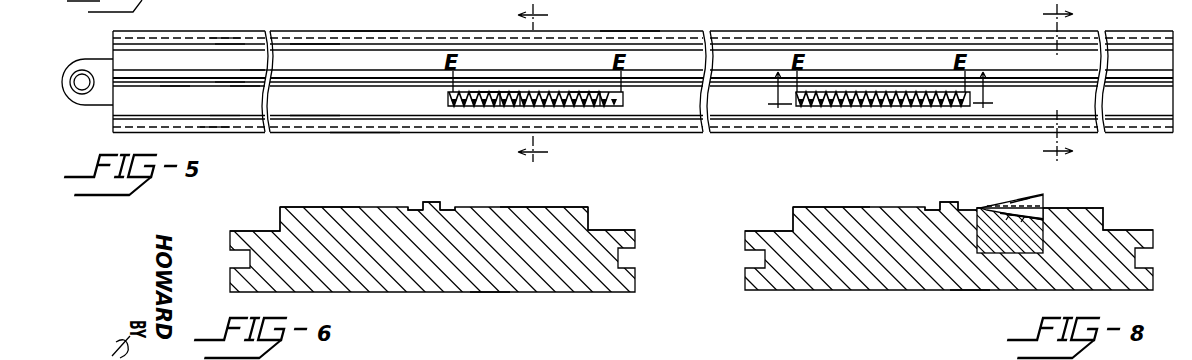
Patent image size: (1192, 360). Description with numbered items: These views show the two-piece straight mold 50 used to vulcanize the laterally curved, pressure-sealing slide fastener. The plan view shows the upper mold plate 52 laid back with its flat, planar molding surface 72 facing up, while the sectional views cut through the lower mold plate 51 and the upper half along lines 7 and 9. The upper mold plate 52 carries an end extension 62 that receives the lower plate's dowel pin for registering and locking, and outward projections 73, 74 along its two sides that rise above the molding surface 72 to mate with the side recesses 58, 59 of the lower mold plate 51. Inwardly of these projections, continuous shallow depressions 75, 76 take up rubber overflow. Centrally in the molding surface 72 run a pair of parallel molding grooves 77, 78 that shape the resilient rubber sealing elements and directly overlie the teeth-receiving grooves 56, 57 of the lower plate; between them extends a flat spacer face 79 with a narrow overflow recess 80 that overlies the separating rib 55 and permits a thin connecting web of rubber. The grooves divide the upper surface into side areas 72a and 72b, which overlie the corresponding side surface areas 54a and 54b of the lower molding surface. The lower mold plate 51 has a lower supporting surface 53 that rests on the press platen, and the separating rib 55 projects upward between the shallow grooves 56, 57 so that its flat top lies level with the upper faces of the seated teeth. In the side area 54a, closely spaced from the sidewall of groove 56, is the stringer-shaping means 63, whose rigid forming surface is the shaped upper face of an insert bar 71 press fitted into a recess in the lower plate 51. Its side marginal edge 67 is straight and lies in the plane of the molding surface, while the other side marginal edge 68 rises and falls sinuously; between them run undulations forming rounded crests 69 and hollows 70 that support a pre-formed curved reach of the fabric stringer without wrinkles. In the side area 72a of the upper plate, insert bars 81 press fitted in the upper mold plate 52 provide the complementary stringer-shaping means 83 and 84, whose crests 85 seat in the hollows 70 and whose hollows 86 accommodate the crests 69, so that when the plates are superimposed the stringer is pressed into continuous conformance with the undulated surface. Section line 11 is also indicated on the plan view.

In FIG. 5, the straight mold 50 is at (358, 136).
In FIG. 5, the upper mold plate 52 is at (640, 32).
In FIG. 5, the end extension 62 is at (88, 72).
In FIG. 5, the molding surface 72 is at (358, 60).
In FIG. 5, the side area 72a is at (335, 110).
In FIG. 5, the side area 72b is at (335, 70).
In FIG. 5, the outward projection 73 is at (222, 42).
In FIG. 5, the outward projection 74 is at (218, 128).
In FIG. 5, the shallow depression 75 is at (231, 48).
In FIG. 5, the shallow depression 76 is at (228, 120).
In FIG. 5, the molding groove 77 is at (257, 80).
In FIG. 5, the molding groove 78 is at (243, 88).
In FIG. 5, the spacer face 79 is at (226, 80).
In FIG. 5, the recess 80 is at (166, 85).
In FIG. 5, the insert bar 81 is at (508, 68).
In FIG. 5, the stringer-shaping means 83 is at (835, 103).
In FIG. 5, the stringer-shaping means 84 is at (478, 105).
In FIG. 5, the crest 85 is at (492, 102).
In FIG. 5, the hollow 86 is at (586, 102).
In FIG. 5, the section line 9— 9 is at (541, 85).
In FIG. 5, the section line 7— 7 is at (1049, 84).
In FIG. 5, the section line 11 is at (885, 79).
In FIG. 6, the lower mold plate 51 is at (477, 283).
In FIG. 8, the lower mold plate 51 is at (890, 283).
In FIG. 6, the lower supporting surface 53 is at (488, 292).
In FIG. 8, the lower supporting surface 53 is at (973, 292).
In FIG. 6, the side surface area 54a is at (332, 205).
In FIG. 8, the side surface area 54a is at (1085, 208).
In FIG. 6, the side surface area 54b is at (522, 207).
In FIG. 8, the side surface area 54b is at (848, 207).
In FIG. 6, the separating rib 55 is at (433, 200).
In FIG. 8, the separating rib 55 is at (949, 201).
In FIG. 6, the teeth-receiving groove 56 is at (413, 207).
In FIG. 8, the teeth-receiving groove 56 is at (975, 207).
In FIG. 6, the teeth-receiving groove 57 is at (452, 208).
In FIG. 8, the teeth-receiving groove 57 is at (963, 209).
In FIG. 6, the side recess 58 is at (262, 231).
In FIG. 8, the side recess 58 is at (1116, 230).
In FIG. 6, the side recess 59 is at (607, 228).
In FIG. 8, the side recess 59 is at (783, 230).
In FIG. 8, the stringer-shaping means 63 is at (1020, 181).
In FIG. 8, the side marginal edge 67 is at (980, 205).
In FIG. 8, the side marginal edge 68 is at (1042, 202).
In FIG. 8, the crest 69 is at (1043, 197).
In FIG. 8, the hollow 70 is at (1040, 216).
In FIG. 8, the insert bar 71 is at (1021, 251).